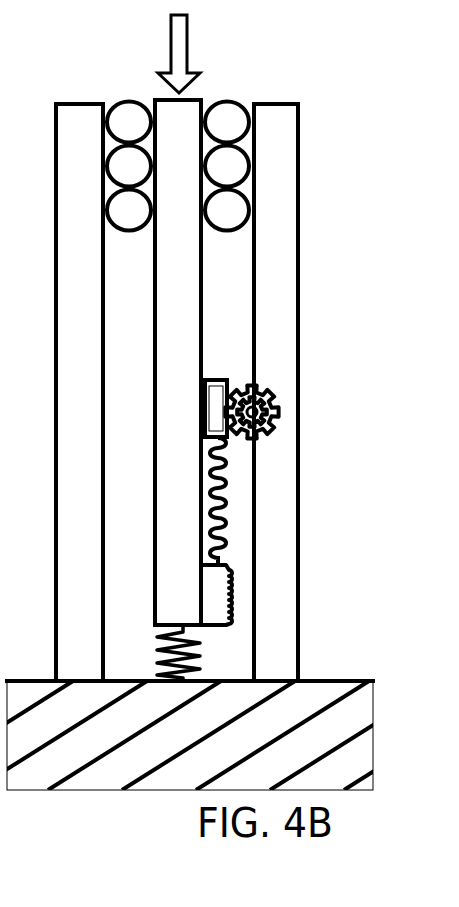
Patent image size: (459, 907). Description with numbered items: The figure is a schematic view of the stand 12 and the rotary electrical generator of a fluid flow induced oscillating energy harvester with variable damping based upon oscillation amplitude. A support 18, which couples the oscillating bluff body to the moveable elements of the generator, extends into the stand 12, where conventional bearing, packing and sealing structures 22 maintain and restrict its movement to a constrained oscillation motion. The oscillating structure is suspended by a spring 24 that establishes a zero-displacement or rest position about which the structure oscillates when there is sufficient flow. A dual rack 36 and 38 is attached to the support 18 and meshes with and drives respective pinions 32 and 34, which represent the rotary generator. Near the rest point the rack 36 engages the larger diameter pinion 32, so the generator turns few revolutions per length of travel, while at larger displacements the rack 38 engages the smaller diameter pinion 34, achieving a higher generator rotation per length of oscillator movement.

The stand 12 is at (87, 296).
The support 18 is at (187, 264).
The bearing, packing and sealing structures 22 is at (142, 133).
The spring 24 is at (153, 639).
The large pinion 32 is at (282, 393).
The smaller pinion 34 is at (260, 412).
The rack 36 is at (225, 513).
The rack 38 is at (233, 595).